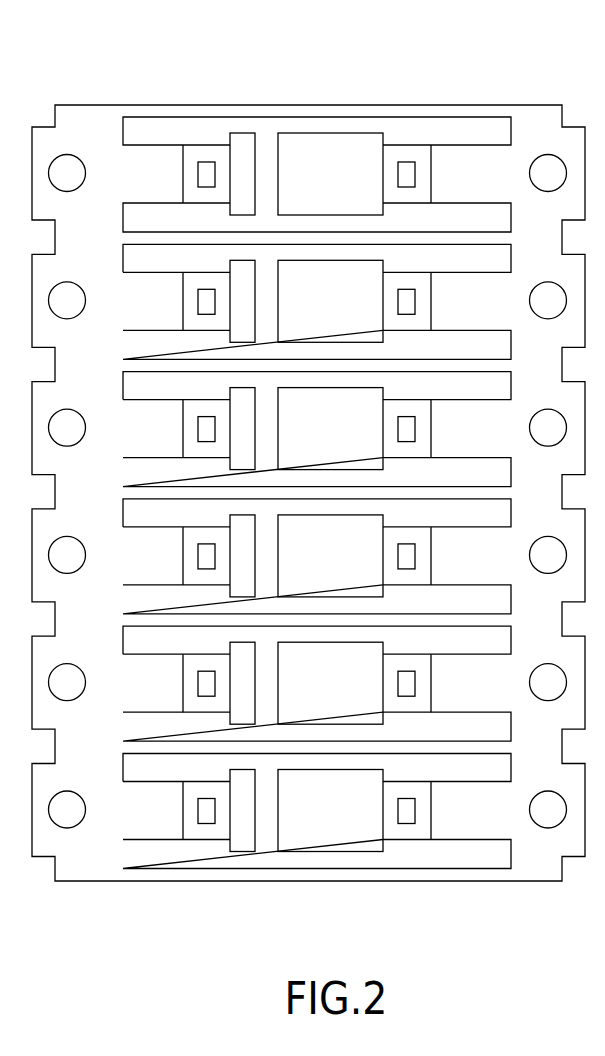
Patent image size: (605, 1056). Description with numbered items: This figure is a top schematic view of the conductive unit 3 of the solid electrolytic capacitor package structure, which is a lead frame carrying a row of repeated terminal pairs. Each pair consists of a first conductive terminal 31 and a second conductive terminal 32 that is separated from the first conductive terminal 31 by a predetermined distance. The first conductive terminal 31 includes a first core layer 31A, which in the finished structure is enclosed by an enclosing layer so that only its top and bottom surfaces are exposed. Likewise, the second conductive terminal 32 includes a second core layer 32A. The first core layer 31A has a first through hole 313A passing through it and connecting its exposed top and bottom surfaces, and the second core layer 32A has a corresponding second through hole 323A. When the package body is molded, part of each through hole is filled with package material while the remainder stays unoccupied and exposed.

The conductive unit 3 is at (125, 58).
The first conductive terminal 31 is at (155, 156).
The second conductive terminal 32 is at (464, 156).
The first core layer 31A is at (221, 150).
The second core layer 32A is at (393, 153).
The first through hole 313A is at (203, 162).
The second through hole 323A is at (412, 162).